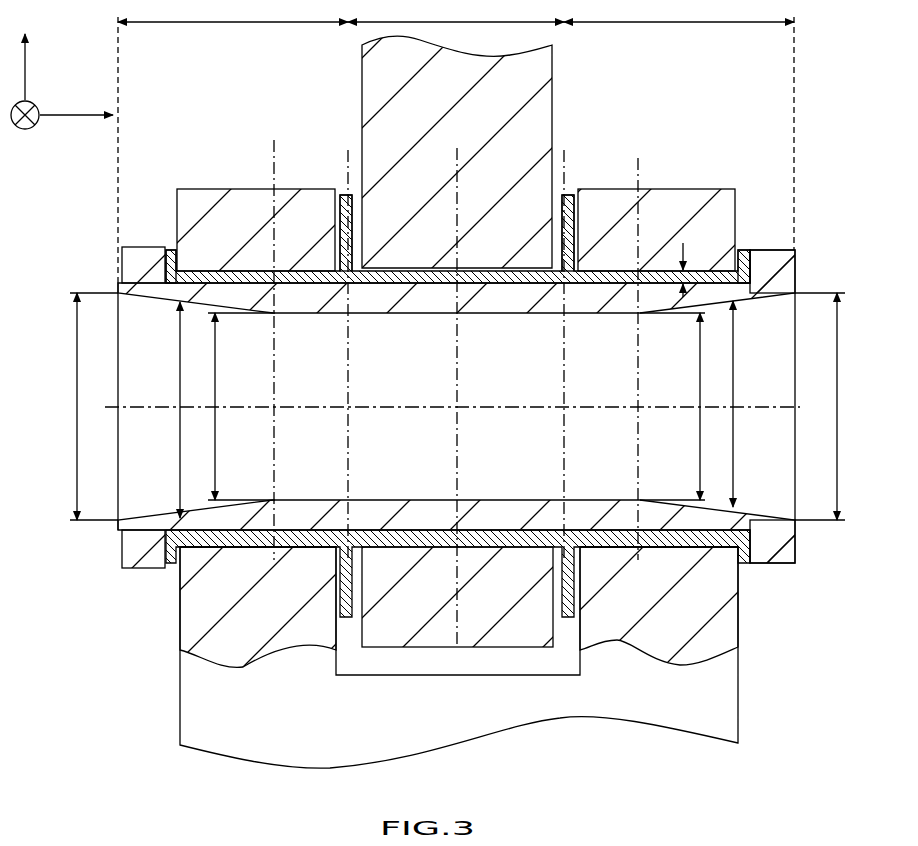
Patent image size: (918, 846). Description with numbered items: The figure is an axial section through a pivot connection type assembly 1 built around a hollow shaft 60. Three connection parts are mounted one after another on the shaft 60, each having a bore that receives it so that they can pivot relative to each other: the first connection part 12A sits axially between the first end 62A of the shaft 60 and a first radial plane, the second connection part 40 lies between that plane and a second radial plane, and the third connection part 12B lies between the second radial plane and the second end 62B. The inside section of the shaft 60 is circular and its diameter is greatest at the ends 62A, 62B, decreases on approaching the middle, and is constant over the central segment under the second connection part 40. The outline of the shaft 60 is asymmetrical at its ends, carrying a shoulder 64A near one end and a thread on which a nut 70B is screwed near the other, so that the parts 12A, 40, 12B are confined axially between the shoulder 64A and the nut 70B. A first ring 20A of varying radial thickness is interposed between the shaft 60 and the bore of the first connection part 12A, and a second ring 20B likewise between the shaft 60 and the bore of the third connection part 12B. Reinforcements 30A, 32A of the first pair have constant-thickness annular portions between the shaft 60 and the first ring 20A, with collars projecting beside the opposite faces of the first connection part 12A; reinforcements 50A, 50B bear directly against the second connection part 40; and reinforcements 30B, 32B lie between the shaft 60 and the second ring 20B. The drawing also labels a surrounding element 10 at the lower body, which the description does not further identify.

The pivot connection type assembly 1 is at (695, 77).
The body 10 is at (190, 700).
The first connection part 12A is at (700, 203).
The third connection part 12B is at (213, 202).
The first ring 20A is at (612, 549).
The second ring 20B is at (205, 549).
The reinforcement 30A is at (746, 250).
The reinforcement 30B is at (171, 252).
The reinforcement 32A is at (567, 197).
The reinforcement 32B is at (345, 197).
The second connection part 40 is at (368, 96).
The reinforcement 50A is at (503, 280).
The reinforcement 50B is at (420, 276).
The shaft 60 is at (780, 488).
The first end of the shaft 62A is at (797, 277).
The second end of the shaft 62B is at (118, 524).
The shoulder 64A is at (778, 566).
The nut 70B is at (148, 570).